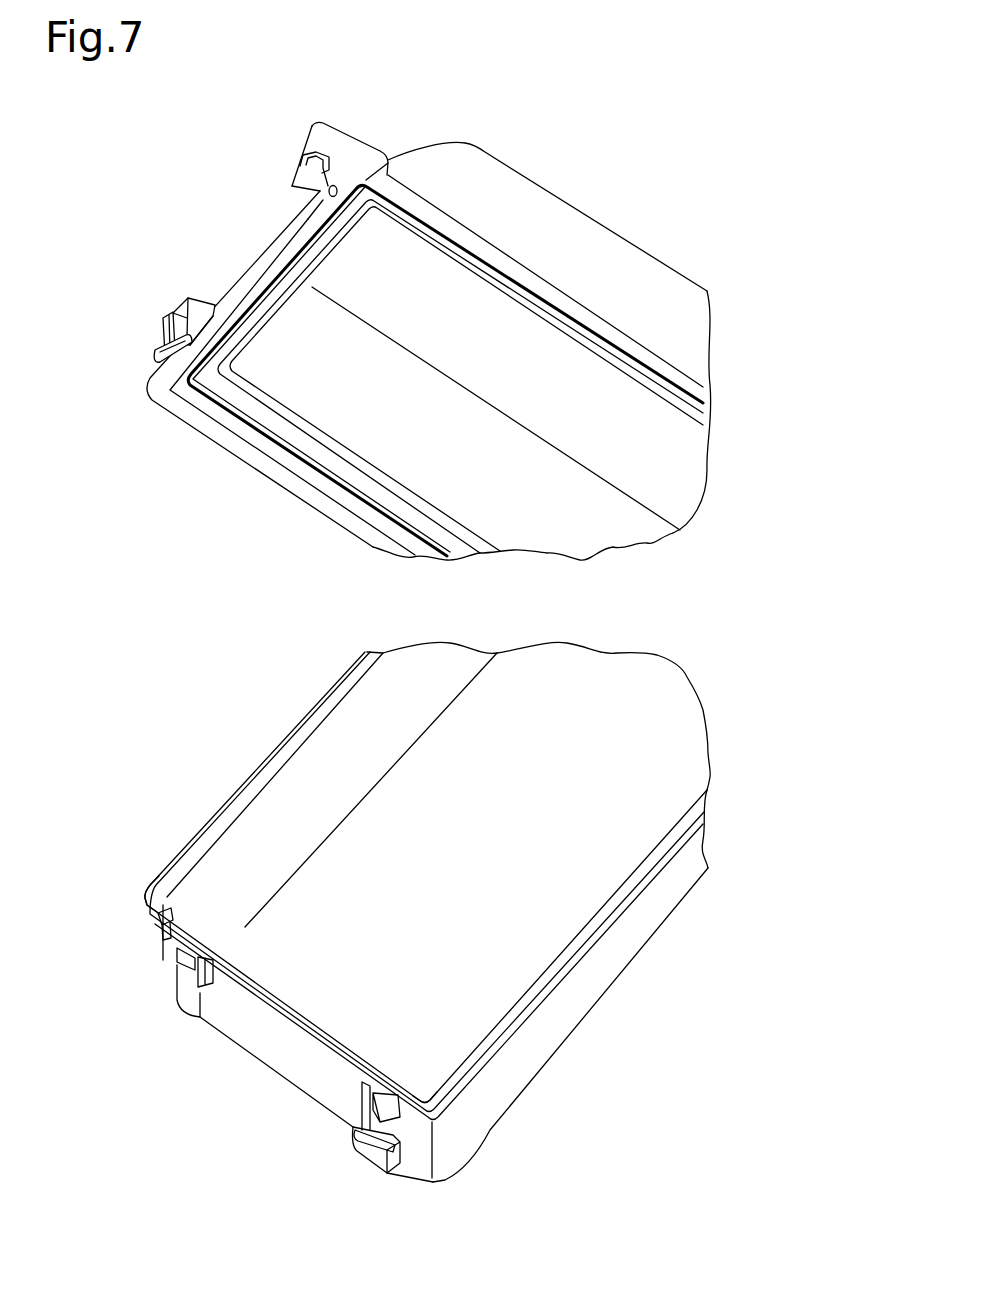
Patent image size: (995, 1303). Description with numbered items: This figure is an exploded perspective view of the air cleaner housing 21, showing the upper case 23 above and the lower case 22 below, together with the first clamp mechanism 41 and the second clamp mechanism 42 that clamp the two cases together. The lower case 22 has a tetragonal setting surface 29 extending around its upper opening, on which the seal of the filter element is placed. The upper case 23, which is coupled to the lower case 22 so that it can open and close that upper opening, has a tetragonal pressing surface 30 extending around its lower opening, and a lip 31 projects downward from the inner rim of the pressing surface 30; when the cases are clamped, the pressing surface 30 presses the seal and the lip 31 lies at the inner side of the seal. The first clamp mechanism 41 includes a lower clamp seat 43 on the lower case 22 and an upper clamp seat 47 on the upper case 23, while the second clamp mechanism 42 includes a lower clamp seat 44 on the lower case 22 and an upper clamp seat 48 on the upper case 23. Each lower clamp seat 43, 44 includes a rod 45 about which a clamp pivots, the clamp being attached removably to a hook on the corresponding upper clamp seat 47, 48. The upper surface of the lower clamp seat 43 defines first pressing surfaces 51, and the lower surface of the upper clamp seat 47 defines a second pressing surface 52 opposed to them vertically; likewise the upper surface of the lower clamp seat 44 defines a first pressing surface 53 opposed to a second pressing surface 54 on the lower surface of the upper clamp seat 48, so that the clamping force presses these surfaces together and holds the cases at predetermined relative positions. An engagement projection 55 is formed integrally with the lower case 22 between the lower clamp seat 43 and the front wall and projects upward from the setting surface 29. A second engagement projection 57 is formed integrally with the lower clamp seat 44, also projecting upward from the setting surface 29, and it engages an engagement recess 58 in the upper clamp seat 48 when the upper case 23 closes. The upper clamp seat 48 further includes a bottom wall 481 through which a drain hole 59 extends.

The housing 21 is at (544, 181).
The lower case 22 is at (663, 907).
The upper case 23 is at (708, 337).
The setting surface 29 is at (617, 893).
The pressing surface 30 is at (593, 340).
The lip 31 is at (651, 394).
The first clamp mechanism 41 is at (195, 297).
The second clamp mechanism 42 is at (364, 138).
The lower clamp seat 43 is at (201, 1010).
The lower clamp seat 44 is at (370, 1165).
The rod 45 is at (185, 963).
The upper clamp seat 47 is at (163, 315).
The upper clamp seat 48 is at (313, 124).
The bottom wall 481 is at (300, 192).
The first pressing surfaces 51 is at (180, 918).
The second pressing surface 52 is at (150, 354).
The first pressing surface 53 is at (352, 1135).
The second pressing surface 54 is at (300, 170).
The engagement projection 55 is at (163, 890).
The engagement projection 57 is at (428, 1100).
The engagement recess 58 is at (320, 188).
The drain hole 59 is at (335, 200).